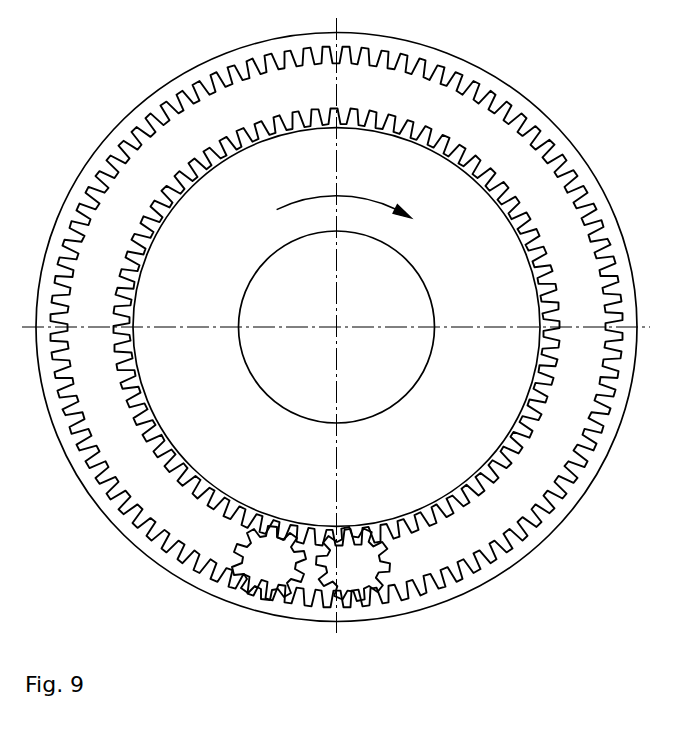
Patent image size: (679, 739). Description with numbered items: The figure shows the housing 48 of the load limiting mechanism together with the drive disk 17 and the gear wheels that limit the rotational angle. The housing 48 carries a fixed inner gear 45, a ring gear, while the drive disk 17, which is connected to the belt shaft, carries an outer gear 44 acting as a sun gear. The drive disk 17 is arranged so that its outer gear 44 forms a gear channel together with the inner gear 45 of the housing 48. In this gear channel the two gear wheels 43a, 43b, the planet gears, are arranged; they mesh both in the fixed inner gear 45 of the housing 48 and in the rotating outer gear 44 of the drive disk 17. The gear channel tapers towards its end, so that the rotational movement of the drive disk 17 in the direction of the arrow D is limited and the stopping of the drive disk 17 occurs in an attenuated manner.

The drive disk 17 is at (468, 428).
The outer gear 44 is at (525, 427).
The inner gear 45 is at (110, 477).
The housing 48 is at (147, 548).
The gear wheel 43a is at (272, 560).
The gear wheel 43b is at (353, 573).